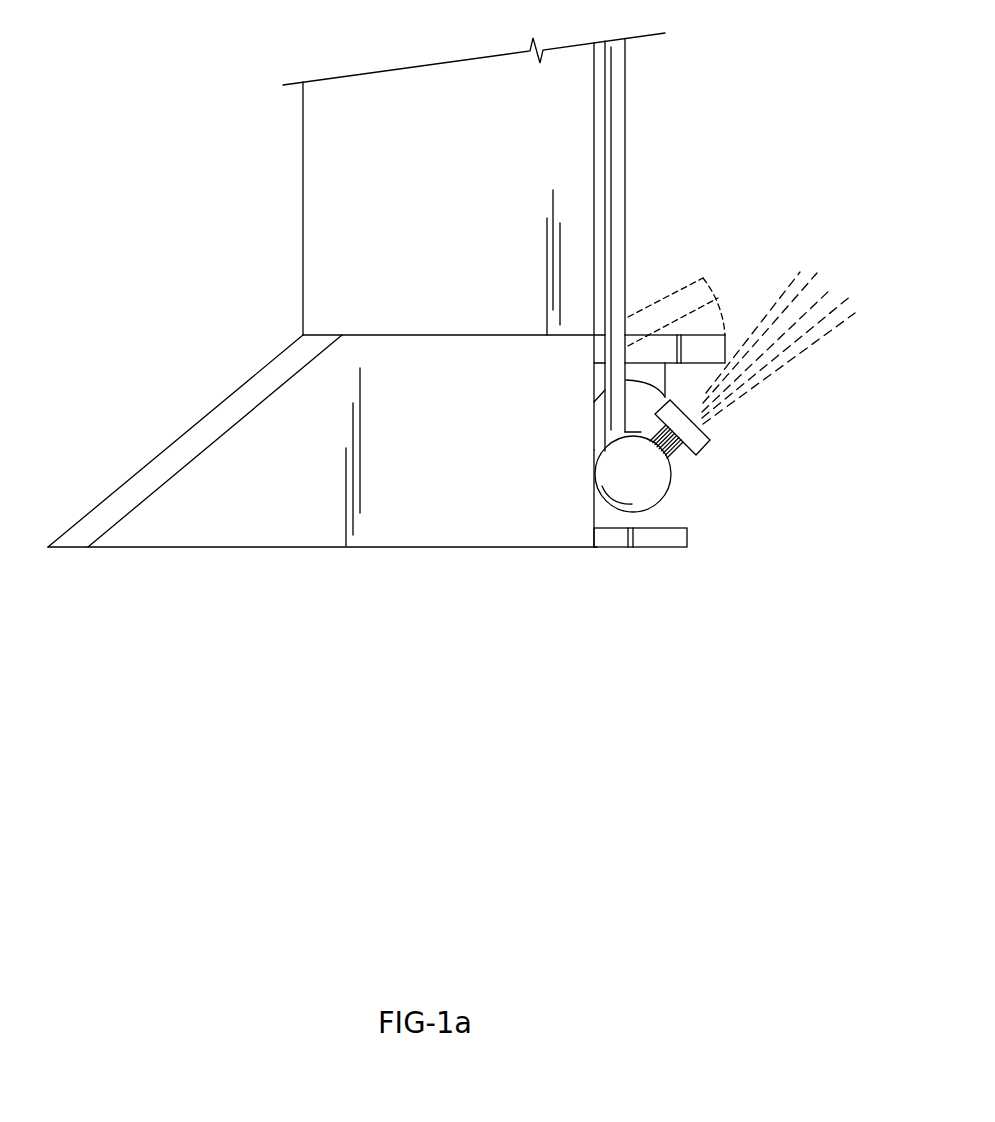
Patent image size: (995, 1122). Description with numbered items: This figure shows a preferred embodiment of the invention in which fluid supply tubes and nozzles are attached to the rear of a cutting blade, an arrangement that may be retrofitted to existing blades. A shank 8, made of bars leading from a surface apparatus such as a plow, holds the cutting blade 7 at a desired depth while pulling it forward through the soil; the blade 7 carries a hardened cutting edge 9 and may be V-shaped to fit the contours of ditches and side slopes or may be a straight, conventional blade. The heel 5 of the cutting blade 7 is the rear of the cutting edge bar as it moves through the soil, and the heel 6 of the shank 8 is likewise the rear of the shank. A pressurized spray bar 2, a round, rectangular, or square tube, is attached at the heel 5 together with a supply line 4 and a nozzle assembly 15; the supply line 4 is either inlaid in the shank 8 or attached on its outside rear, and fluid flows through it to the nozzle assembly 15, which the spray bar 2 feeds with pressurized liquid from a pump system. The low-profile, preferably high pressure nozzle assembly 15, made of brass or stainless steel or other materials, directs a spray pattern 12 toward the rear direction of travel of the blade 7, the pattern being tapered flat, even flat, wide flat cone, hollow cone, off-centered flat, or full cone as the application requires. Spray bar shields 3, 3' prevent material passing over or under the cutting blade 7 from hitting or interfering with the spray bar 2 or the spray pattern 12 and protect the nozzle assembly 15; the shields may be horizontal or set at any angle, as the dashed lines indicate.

The pressurized spray bar 2 is at (635, 483).
The spray bar shield 3 is at (701, 292).
The spray bar shield 3' is at (694, 595).
The supply line 4 is at (627, 170).
The heel of cutting blade 5 is at (592, 507).
The heel of shank 6 is at (596, 91).
The cutting blade 7 is at (320, 412).
The shank 8 is at (328, 158).
The hardened cutting edge 9 is at (152, 477).
The spray pattern 12 is at (801, 300).
The nozzle assembly 15 is at (688, 437).